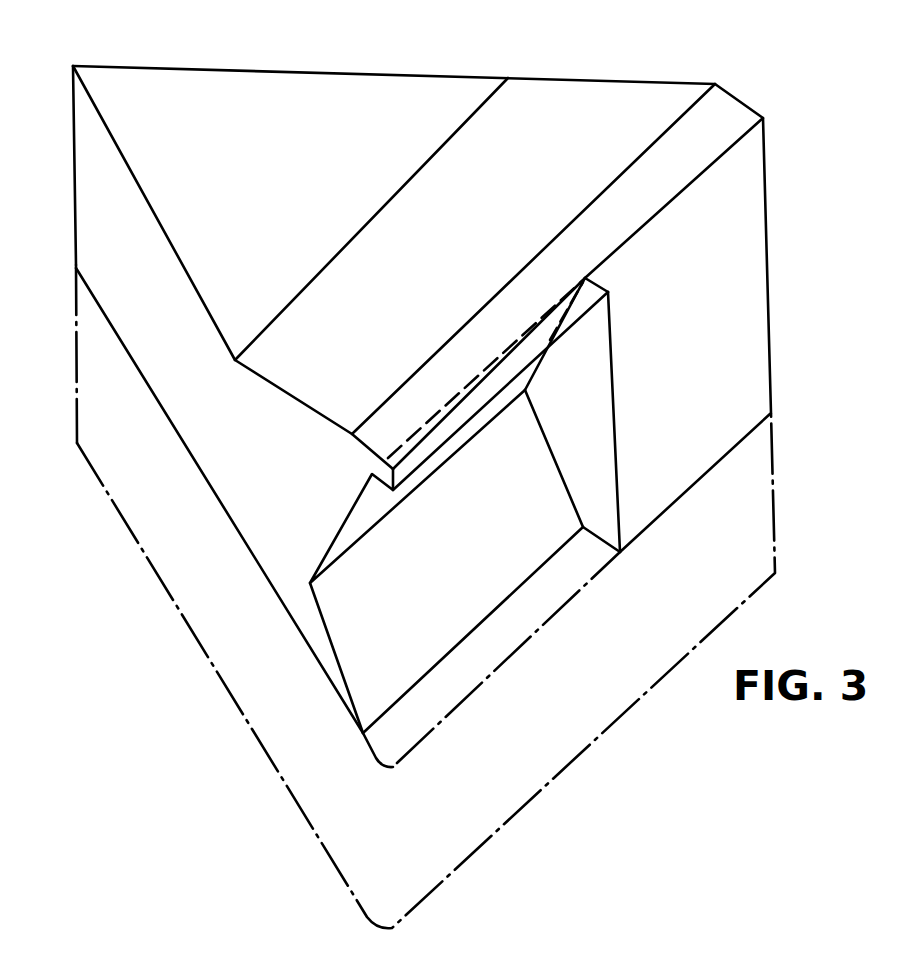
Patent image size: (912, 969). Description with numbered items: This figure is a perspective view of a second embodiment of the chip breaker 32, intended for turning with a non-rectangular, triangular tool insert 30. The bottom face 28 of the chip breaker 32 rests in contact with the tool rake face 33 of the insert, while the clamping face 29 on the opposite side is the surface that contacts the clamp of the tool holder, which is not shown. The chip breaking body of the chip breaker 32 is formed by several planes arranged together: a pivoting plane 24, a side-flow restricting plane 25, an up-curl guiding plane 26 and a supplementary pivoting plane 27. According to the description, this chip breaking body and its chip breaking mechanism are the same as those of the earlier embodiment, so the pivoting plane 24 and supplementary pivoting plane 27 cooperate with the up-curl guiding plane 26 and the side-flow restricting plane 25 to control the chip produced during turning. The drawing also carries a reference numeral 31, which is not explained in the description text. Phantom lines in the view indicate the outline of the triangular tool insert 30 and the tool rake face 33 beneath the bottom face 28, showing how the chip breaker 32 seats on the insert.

The pivoting plane 24 is at (492, 550).
The side-flow restricting plane 25 is at (585, 405).
The up-curl guiding plane 26 is at (365, 515).
The supplementary pivoting plane 27 is at (570, 330).
The bottom face 28 is at (197, 468).
The clamping face 29 is at (268, 97).
The triangular tool insert 30 is at (97, 388).
The phantom bottom edge 31 is at (460, 707).
The chip breaker 32 is at (97, 226).
The tool rake face 33 is at (403, 732).